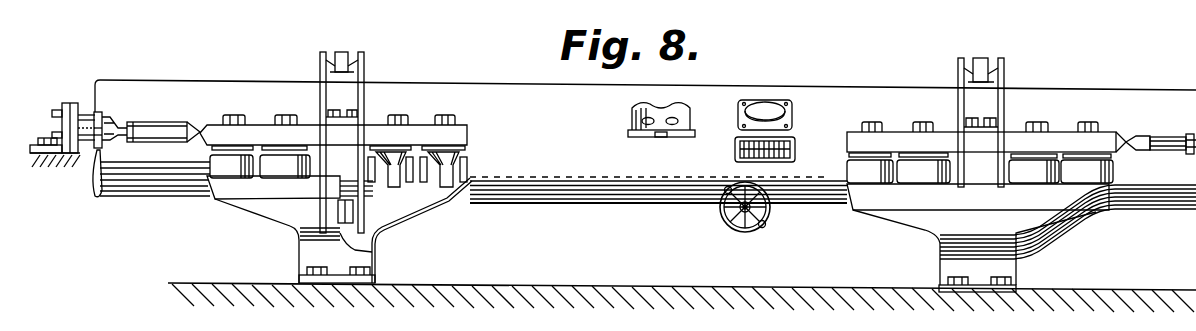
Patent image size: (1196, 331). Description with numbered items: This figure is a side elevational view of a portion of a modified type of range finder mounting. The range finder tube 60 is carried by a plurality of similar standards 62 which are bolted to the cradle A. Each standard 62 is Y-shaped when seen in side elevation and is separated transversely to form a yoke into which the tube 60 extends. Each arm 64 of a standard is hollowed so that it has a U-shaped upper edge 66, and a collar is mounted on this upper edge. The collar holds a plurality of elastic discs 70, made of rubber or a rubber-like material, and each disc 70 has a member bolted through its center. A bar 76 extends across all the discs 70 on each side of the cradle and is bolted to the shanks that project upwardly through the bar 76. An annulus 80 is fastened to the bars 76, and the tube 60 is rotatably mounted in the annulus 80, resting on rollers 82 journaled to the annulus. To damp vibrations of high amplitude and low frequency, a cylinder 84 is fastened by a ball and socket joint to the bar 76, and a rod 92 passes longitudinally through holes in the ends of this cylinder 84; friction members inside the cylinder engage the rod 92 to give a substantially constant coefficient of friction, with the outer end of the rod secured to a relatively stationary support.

The range finder tube 60 is at (563, 183).
The standard 62 is at (313, 257).
The arm 64 is at (270, 200).
The U-shaped upper edge 66 is at (470, 180).
The elastic disc 70 is at (433, 175).
The bar 76 is at (255, 130).
The annulus 80 is at (365, 82).
The roller 82 is at (342, 55).
The cylinder 84 is at (162, 128).
The rod 92 is at (125, 128).
The cradle A is at (610, 297).